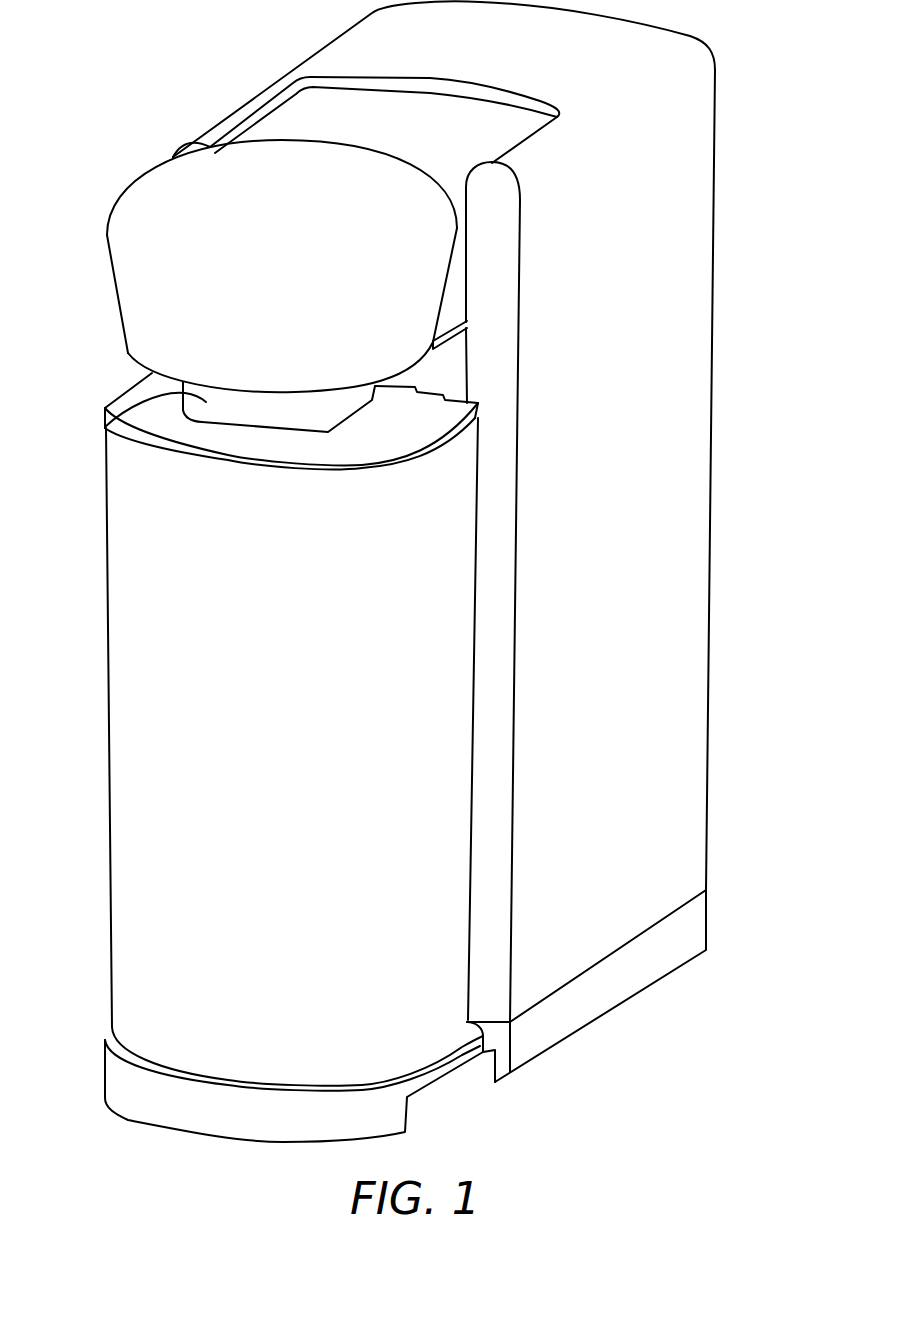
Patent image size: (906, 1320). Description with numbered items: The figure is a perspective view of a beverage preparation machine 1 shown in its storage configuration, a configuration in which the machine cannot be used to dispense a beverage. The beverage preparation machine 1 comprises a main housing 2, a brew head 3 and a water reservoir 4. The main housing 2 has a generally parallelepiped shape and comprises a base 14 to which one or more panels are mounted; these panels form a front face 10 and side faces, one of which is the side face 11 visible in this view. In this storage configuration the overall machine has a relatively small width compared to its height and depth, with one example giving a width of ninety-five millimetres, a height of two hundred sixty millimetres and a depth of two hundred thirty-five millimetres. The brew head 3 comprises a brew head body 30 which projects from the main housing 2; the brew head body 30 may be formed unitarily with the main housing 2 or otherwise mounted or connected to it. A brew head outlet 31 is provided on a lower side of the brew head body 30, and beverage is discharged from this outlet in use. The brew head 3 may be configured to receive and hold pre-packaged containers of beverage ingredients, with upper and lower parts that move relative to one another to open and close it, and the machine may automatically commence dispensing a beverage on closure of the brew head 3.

The beverage preparation machine 1 is at (416, 571).
The main housing 2 is at (710, 716).
The brew head 3 is at (260, 286).
The water reservoir 4 is at (264, 757).
The front face 10 is at (466, 362).
The side face 11 is at (706, 446).
The base 14 is at (641, 990).
The brew head body 30 is at (128, 197).
The brew head outlet 31 is at (123, 428).